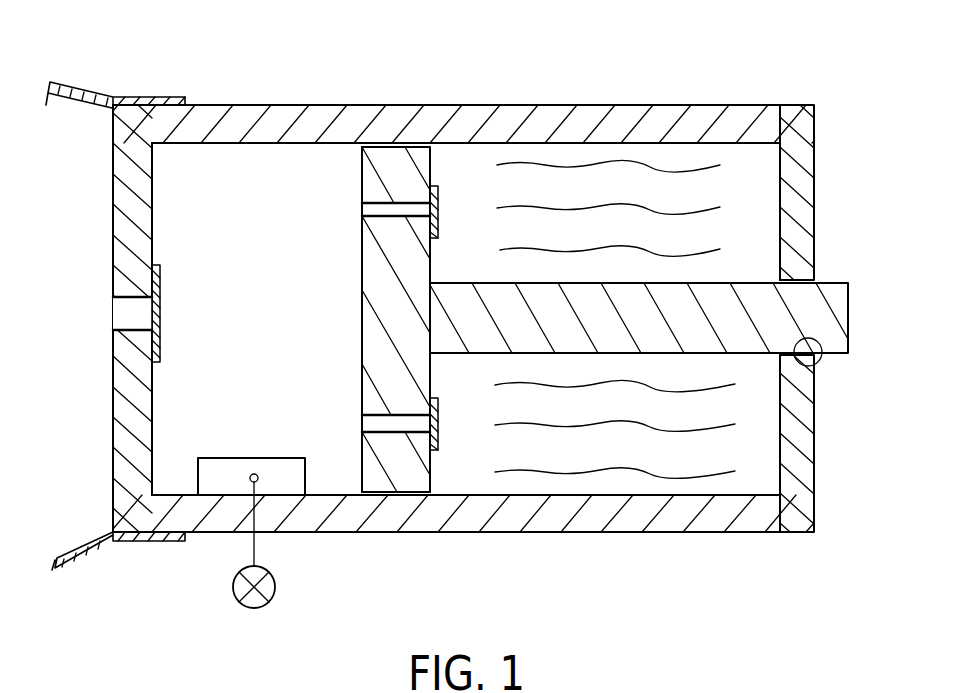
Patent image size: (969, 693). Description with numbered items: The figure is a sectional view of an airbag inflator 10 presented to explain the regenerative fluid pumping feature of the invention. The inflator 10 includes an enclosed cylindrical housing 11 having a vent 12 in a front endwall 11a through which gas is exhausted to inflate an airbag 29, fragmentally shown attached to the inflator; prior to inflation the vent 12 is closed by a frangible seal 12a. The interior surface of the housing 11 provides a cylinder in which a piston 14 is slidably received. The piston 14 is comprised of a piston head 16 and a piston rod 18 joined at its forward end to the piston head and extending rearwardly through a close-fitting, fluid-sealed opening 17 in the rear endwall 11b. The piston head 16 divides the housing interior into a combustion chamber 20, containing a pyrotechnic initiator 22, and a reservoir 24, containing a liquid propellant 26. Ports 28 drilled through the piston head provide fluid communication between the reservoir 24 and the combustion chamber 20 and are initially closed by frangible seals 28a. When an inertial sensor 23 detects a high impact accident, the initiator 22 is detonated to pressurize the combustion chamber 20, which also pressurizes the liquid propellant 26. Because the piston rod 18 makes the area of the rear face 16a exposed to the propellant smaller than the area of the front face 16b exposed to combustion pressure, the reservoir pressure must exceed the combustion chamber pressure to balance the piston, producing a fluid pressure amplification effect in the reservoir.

The inflator 10 is at (703, 68).
The enclosed cylindrical housing 11 is at (537, 124).
The front endwall 11a is at (122, 427).
The rear endwall 11b is at (803, 223).
The vent 12 is at (132, 328).
The frangible seal 12a is at (160, 282).
The piston 14 is at (345, 311).
The piston head 16 is at (408, 369).
The rear face of the piston head 16a is at (435, 386).
The front face of the piston head 16b is at (360, 348).
The fluid-sealed opening 17 is at (822, 358).
The piston rod 18 is at (627, 327).
The combustion chamber 20 is at (270, 409).
The pyrotechnic initiator 22 is at (216, 468).
The inertial sensor 23 is at (276, 588).
The reservoir 24 is at (607, 463).
The liquid propellant 26 is at (700, 443).
The ports 28 is at (385, 215).
The frangible seals 28a is at (440, 208).
The airbag 29 is at (98, 548).